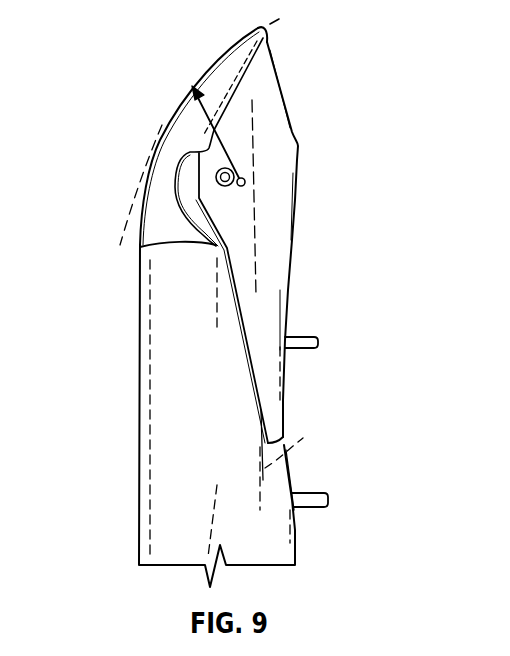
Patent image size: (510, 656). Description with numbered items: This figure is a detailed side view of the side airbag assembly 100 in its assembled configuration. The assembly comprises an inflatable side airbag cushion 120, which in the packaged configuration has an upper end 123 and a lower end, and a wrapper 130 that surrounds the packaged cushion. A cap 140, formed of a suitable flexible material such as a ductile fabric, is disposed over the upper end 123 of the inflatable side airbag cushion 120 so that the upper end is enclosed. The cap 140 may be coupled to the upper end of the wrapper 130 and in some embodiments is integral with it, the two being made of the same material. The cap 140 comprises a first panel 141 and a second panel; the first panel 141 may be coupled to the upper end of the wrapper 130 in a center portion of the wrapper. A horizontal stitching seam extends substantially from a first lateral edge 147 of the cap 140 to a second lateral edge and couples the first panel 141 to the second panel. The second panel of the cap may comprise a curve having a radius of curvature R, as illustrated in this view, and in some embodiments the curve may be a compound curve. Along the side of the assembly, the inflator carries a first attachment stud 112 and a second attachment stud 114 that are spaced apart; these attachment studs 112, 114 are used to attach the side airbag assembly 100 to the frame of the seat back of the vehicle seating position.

The side airbag assembly 100 is at (226, 302).
The first panel 141 is at (184, 120).
The upper end 123 is at (147, 180).
The wrapper 130 is at (145, 414).
The first lateral edge 147 is at (277, 133).
The cap 140 is at (294, 242).
The first attachment stud 112 is at (303, 336).
The inflatable side airbag cushion 120 is at (303, 438).
The second attachment stud 114 is at (309, 492).
The radius of curvature R is at (212, 133).